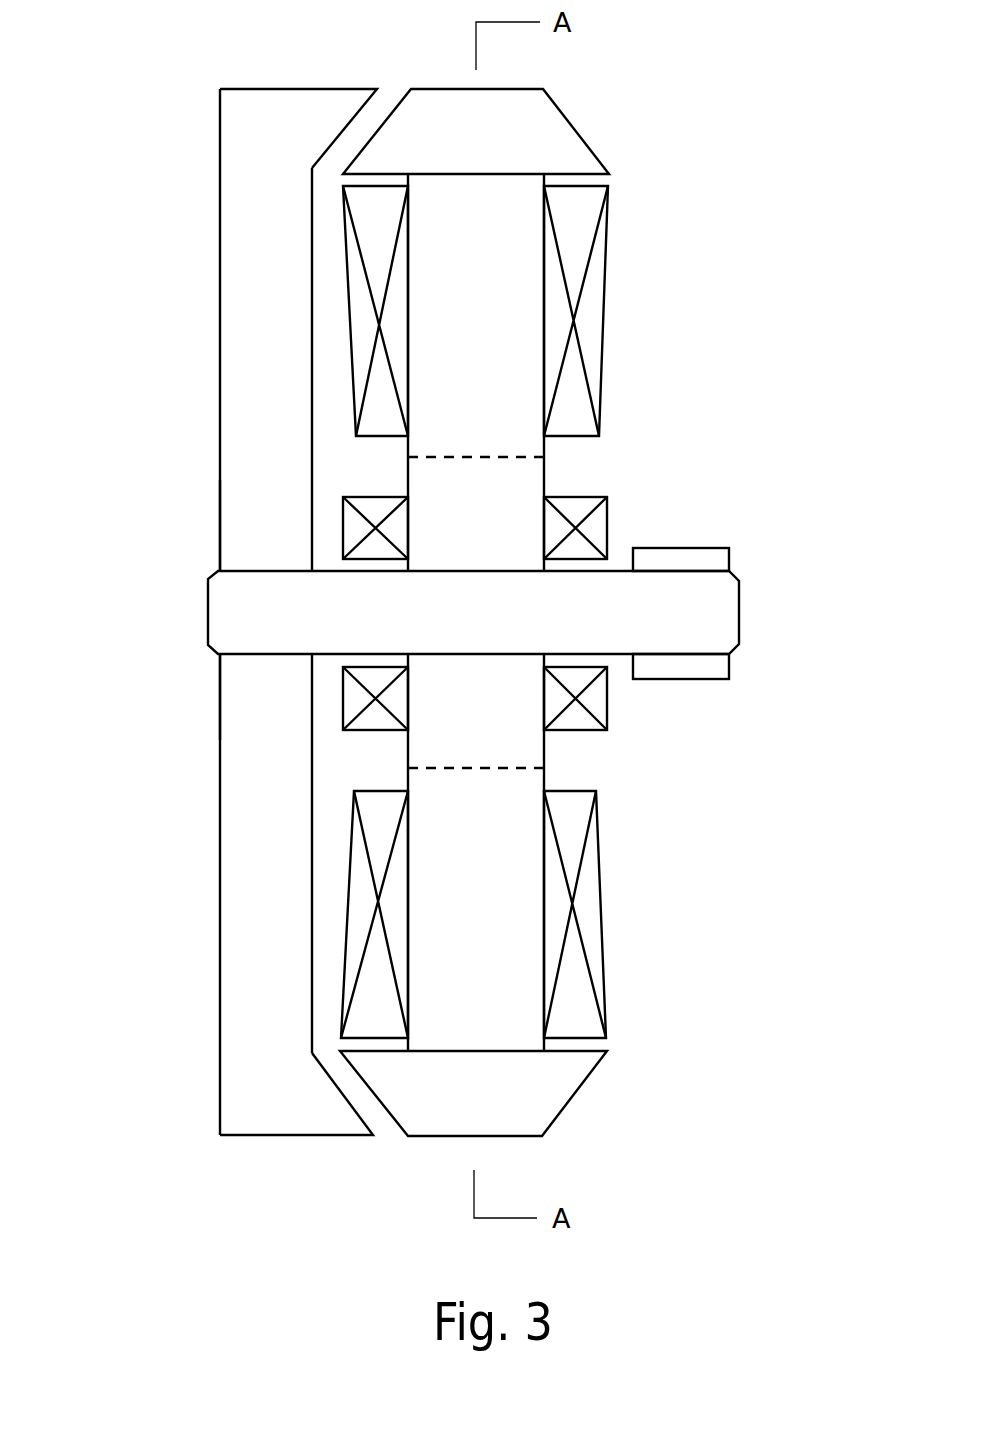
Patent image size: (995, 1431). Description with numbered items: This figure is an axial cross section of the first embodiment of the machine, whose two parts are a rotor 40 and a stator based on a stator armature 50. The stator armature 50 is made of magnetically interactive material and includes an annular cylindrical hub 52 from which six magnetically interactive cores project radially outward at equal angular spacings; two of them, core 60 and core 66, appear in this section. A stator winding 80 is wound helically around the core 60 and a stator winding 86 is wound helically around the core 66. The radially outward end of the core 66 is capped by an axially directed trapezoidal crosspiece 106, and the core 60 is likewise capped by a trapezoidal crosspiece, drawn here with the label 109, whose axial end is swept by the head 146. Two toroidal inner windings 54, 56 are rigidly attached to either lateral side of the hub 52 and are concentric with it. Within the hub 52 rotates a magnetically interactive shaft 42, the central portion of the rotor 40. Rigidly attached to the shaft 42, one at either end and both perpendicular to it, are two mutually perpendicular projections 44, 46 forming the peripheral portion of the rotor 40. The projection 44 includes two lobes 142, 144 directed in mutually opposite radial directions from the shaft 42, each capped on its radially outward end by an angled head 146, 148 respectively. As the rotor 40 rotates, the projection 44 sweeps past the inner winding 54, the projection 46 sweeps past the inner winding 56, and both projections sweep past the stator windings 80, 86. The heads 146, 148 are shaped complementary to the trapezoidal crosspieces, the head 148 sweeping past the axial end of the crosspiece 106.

The rotor 40 is at (172, 300).
The shaft 42 is at (509, 626).
The projection 44 is at (243, 710).
The projection 46 is at (720, 670).
The stator armature 50 is at (645, 170).
The hub 52 is at (509, 523).
The inner winding 54 is at (391, 556).
The inner winding 56 is at (567, 505).
The core 60 is at (510, 339).
The core 66 is at (508, 909).
The stator winding 80 is at (391, 218).
The stator winding 86 is at (390, 1034).
The crosspiece 106 is at (502, 1106).
The upper end plate 109 is at (502, 148).
The lobe 142 is at (298, 318).
The lobe 144 is at (288, 871).
The angled head 146 is at (273, 107).
The angled head 148 is at (270, 1127).